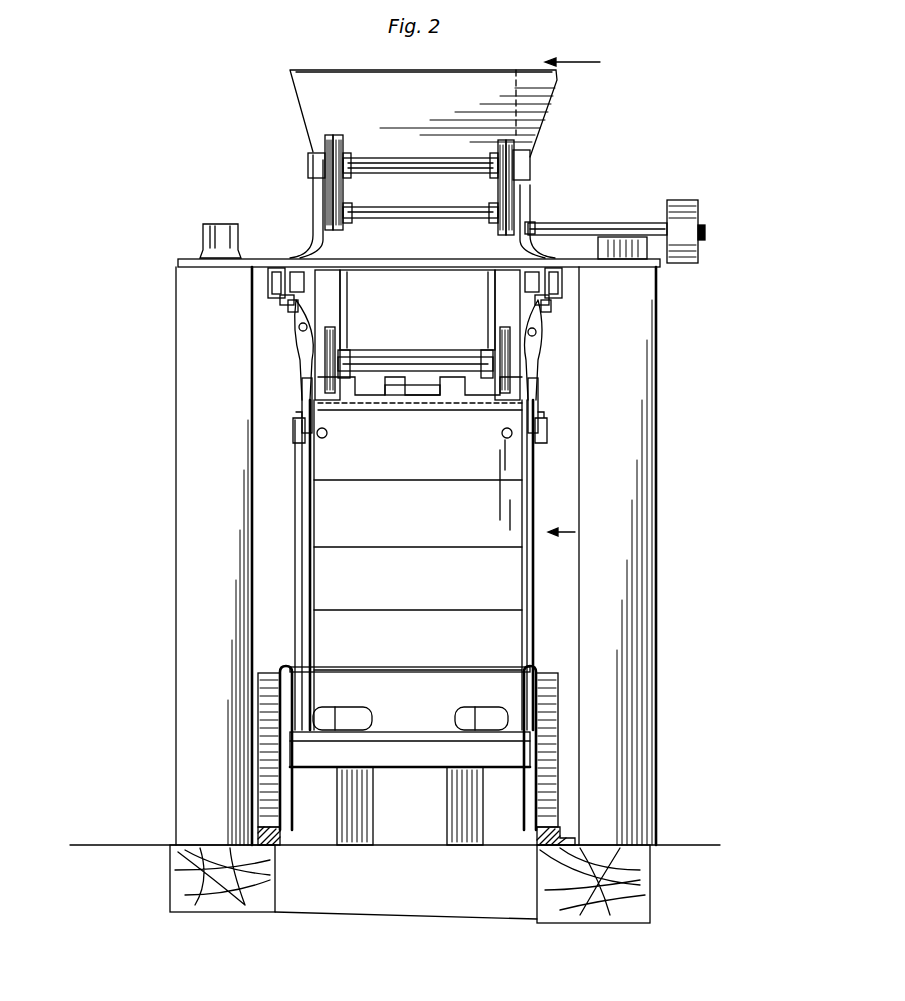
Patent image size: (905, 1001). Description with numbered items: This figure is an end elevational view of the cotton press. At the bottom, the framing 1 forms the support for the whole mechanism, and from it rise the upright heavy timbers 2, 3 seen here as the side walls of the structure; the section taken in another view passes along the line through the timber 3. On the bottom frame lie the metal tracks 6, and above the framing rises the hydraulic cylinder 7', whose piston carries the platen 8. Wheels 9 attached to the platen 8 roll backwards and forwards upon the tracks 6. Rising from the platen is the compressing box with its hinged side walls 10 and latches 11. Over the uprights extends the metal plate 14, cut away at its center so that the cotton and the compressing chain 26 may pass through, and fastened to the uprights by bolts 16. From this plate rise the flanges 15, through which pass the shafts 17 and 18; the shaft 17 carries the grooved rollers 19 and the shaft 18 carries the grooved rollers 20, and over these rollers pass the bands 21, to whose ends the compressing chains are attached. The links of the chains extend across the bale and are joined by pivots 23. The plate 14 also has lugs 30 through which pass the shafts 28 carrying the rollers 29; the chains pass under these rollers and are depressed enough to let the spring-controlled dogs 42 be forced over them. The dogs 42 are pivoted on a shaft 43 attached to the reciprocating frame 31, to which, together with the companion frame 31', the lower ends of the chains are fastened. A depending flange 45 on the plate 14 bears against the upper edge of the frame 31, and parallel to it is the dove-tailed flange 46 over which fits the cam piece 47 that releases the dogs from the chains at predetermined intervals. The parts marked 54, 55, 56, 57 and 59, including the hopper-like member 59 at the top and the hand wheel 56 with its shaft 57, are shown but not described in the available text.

The framing 1 is at (235, 905).
The upright heavy timber 2 is at (650, 662).
The upright heavy timber 3 is at (152, 642).
The metal track 6 is at (283, 842).
The hydraulic cylinder 7' is at (410, 806).
The platen 8 is at (410, 737).
The wheel 9 is at (265, 765).
The hinged side wall 10 is at (544, 634).
The latch 11 is at (296, 446).
The metal plate 14 is at (583, 262).
The flange 15 is at (320, 215).
The bolt 16 is at (197, 256).
The shaft 17 is at (452, 218).
The shaft 18 is at (455, 173).
The grooved roller 19 is at (522, 226).
The grooved roller 20 is at (496, 158).
The band 21 is at (531, 190).
The pivot 23 is at (392, 398).
The compressing chain 26 is at (421, 398).
The shaft 28 is at (397, 370).
The roller 29 is at (336, 335).
The lug 30 is at (345, 345).
The reciprocating frame 31 is at (544, 565).
The reciprocating frame 31' is at (285, 565).
The dog 42 is at (302, 385).
The shaft 43 is at (300, 335).
The depending flange 45 is at (305, 277).
The dove-tailed flange 46 is at (268, 275).
The cam piece 47 is at (562, 290).
The pivot block 54 is at (292, 312).
The pin 55 is at (282, 305).
The hand wheel 56 is at (700, 204).
The shaft 57 is at (590, 227).
The hopper 59 is at (423, 113).